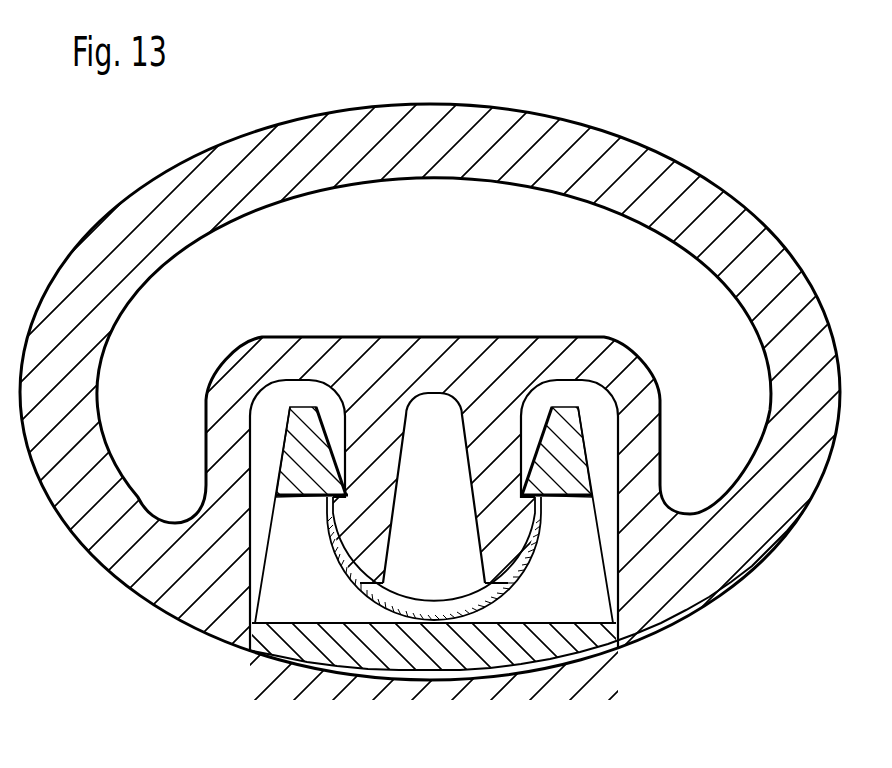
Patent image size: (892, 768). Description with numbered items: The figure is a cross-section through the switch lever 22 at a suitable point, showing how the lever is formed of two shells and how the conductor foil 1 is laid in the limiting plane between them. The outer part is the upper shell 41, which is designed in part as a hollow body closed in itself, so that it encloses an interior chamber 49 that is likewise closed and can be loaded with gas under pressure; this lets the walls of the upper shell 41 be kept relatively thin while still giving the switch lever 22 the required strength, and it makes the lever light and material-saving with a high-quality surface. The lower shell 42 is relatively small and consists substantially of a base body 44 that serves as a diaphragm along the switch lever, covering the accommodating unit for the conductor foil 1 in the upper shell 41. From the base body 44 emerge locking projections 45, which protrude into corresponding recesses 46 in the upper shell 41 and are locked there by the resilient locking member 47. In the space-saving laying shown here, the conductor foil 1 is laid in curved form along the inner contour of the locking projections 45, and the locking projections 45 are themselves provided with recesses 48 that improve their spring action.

The conductor foil 1 is at (367, 597).
The switch lever 22 is at (604, 114).
The upper shell 41 is at (724, 180).
The lower shell 42 is at (549, 678).
The base body 44 is at (277, 644).
The locking projections 45 is at (298, 430).
The recesses 46 is at (602, 418).
The resilient locking member 47 is at (389, 468).
The recesses 48 is at (594, 597).
The interior chamber 49 is at (208, 267).